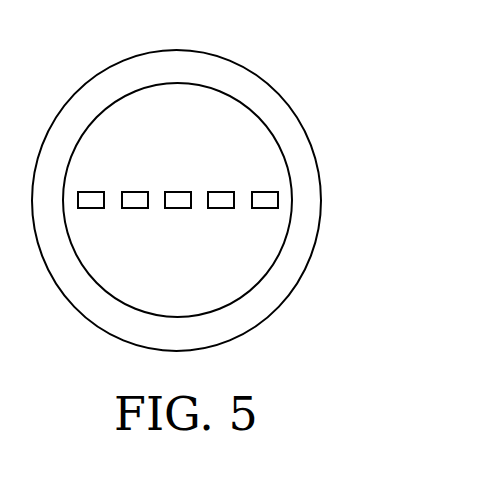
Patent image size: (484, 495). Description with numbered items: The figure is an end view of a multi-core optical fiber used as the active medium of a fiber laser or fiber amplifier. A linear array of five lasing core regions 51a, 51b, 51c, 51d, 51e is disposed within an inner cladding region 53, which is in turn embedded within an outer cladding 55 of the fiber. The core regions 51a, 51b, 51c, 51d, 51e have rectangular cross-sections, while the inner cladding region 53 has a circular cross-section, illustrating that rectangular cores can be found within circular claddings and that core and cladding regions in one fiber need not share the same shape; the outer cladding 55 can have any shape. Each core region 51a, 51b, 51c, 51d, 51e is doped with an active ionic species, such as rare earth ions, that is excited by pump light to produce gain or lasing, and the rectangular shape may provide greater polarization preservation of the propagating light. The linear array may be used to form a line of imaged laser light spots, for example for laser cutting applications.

The lasing core region 51a is at (90, 192).
The lasing core region 51b is at (135, 208).
The lasing core region 51c is at (176, 192).
The lasing core region 51d is at (220, 209).
The lasing core region 51e is at (263, 193).
The inner cladding region 53 is at (203, 100).
The outer cladding 55 is at (255, 82).